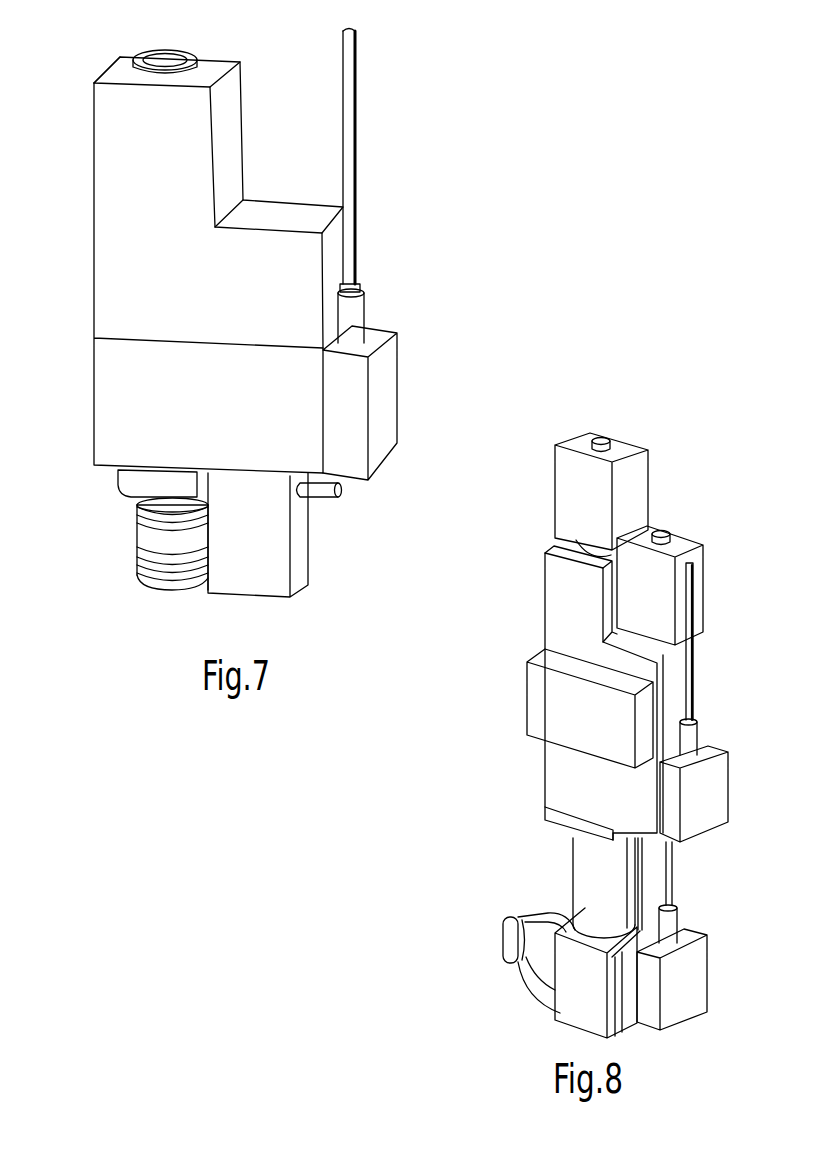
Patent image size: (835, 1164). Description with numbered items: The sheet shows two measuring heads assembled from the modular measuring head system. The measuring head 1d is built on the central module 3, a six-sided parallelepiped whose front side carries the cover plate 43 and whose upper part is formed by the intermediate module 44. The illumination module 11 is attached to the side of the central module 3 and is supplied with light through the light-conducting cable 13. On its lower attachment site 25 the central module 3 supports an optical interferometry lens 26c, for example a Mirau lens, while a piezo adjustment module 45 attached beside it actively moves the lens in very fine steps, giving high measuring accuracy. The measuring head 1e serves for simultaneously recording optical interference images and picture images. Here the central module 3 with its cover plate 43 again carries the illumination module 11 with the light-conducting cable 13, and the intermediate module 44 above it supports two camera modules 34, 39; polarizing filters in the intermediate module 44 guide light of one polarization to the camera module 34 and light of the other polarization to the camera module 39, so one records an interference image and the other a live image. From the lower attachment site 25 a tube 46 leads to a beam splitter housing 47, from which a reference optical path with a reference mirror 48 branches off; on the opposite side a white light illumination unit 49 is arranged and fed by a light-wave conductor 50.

In FIG. 7, the measuring head 1d is at (407, 167).
In FIG. 8, the measuring head 1e is at (520, 573).
In FIG. 7, the central module 3 is at (125, 442).
In FIG. 7, the illumination module 11 is at (387, 363).
In FIG. 8, the illumination module 11 is at (703, 793).
In FIG. 7, the light-conducting cable 13 is at (347, 120).
In FIG. 8, the light-conducting cable 13 is at (694, 590).
In FIG. 7, the attachment site 25 is at (120, 500).
In FIG. 8, the attachment site 25 is at (535, 828).
In FIG. 7, the optical interferometry lens 26c is at (127, 540).
In FIG. 8, the camera module 34 is at (637, 485).
In FIG. 8, the camera module 39 is at (700, 562).
In FIG. 7, the cover plate 43 is at (125, 403).
In FIG. 8, the cover plate 43 is at (570, 778).
In FIG. 7, the intermediate module 44 is at (260, 208).
In FIG. 8, the intermediate module 44 is at (698, 672).
In FIG. 7, the piezo adjustment module 45 is at (296, 543).
In FIG. 8, the tube 46 is at (578, 872).
In FIG. 8, the beam splitter housing 47 is at (580, 982).
In FIG. 8, the reference mirror 48 is at (503, 942).
In FIG. 8, the white light illumination unit 49 is at (690, 972).
In FIG. 8, the light-wave conductor 50 is at (677, 873).